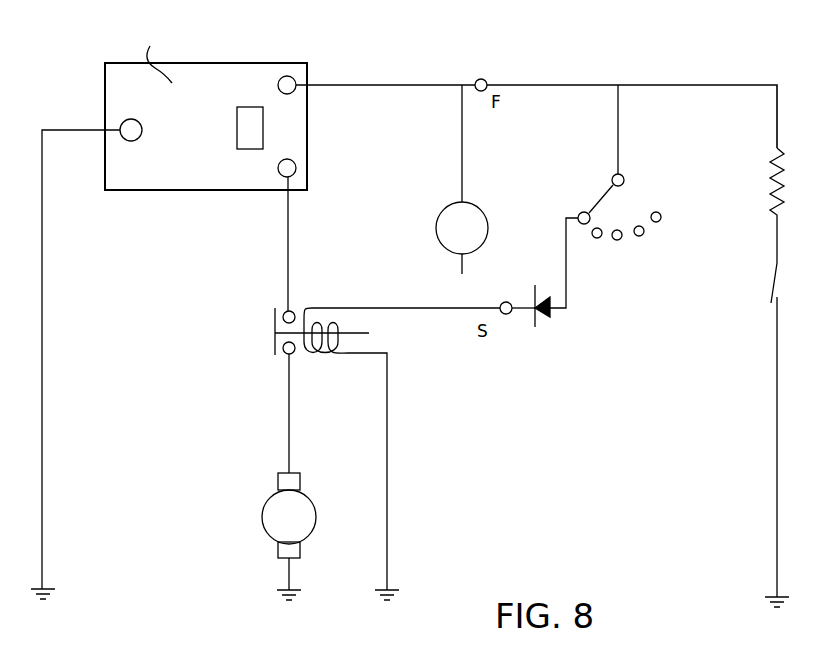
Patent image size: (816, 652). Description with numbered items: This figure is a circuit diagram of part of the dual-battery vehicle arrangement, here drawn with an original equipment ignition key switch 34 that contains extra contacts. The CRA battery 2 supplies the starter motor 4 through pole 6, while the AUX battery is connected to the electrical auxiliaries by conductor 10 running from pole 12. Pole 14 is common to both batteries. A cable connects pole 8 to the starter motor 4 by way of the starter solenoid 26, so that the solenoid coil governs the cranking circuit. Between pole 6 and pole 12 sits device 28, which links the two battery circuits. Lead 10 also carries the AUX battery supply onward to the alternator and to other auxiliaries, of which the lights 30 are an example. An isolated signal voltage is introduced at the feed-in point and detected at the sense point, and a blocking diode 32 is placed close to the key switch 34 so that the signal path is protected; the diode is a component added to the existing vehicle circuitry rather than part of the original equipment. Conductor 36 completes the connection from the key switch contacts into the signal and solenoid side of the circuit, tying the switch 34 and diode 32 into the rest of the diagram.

The CRA battery 2 is at (127, 181).
The starter motor 4 is at (312, 500).
The pole 6 is at (297, 168).
The pole 8 is at (159, 54).
The conductor 10 is at (462, 155).
The pole 12 is at (297, 92).
The pole 14 is at (121, 125).
The starter solenoid 26 is at (327, 355).
The device 28 is at (250, 150).
The lights 30 is at (770, 157).
The blocking diode 32 is at (537, 327).
The key switch 34 is at (600, 204).
The conductor 36 is at (566, 270).